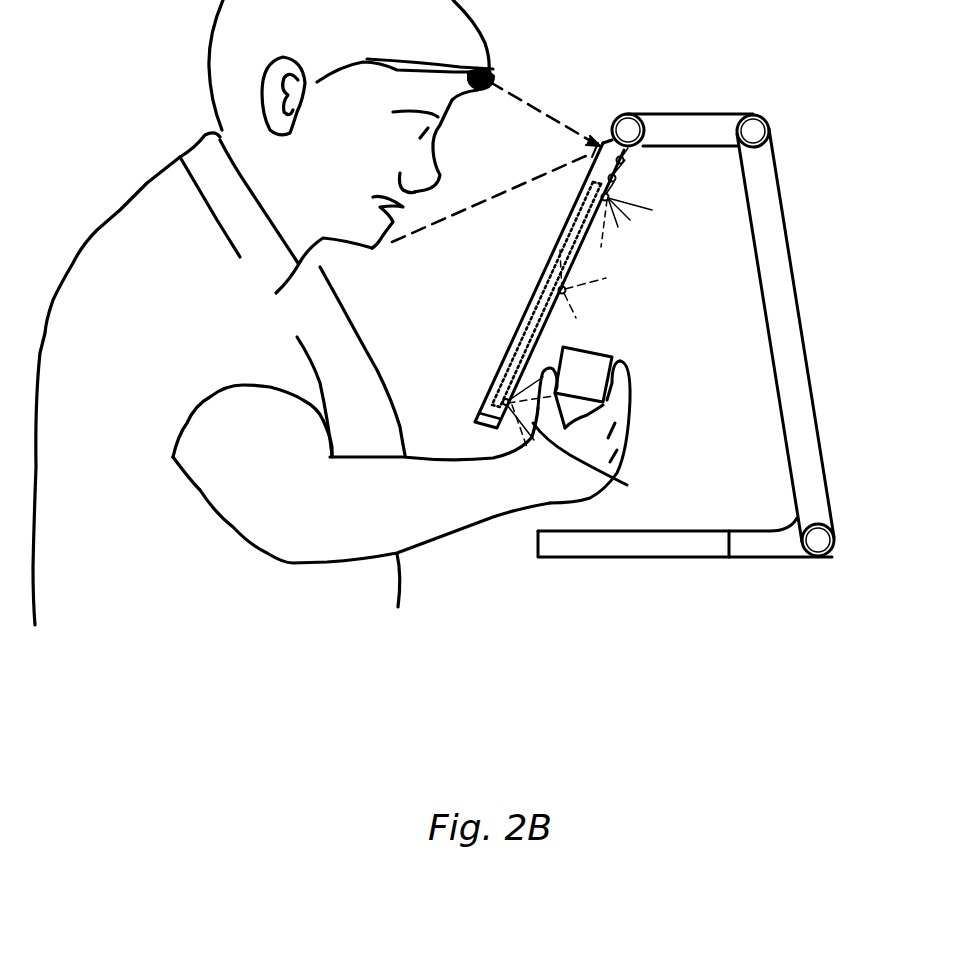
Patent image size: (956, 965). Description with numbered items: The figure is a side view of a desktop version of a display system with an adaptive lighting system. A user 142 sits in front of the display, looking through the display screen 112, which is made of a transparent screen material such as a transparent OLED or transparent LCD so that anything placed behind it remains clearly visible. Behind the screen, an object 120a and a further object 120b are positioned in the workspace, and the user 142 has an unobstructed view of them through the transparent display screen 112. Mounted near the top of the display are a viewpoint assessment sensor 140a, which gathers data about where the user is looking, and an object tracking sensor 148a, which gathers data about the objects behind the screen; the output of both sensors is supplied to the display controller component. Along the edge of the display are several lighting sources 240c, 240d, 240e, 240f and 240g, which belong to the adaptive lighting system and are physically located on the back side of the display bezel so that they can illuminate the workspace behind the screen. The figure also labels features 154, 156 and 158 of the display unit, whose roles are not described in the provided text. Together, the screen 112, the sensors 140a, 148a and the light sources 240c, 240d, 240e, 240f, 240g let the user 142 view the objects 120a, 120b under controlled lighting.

The user 142 is at (133, 257).
The viewpoint assessment sensor 140a is at (603, 142).
The object tracking sensor 148a is at (622, 152).
The device housing 156 is at (522, 332).
The device tip 154 is at (481, 431).
The display screen 112 is at (568, 258).
The sensing region 158 is at (560, 288).
The lighting source 240c is at (624, 158).
The lighting source 240d is at (614, 180).
The lighting source 240e is at (560, 292).
The lighting source 240g is at (493, 402).
The lighting source 240f is at (627, 485).
The object 120b is at (590, 355).
The object 120a is at (620, 385).